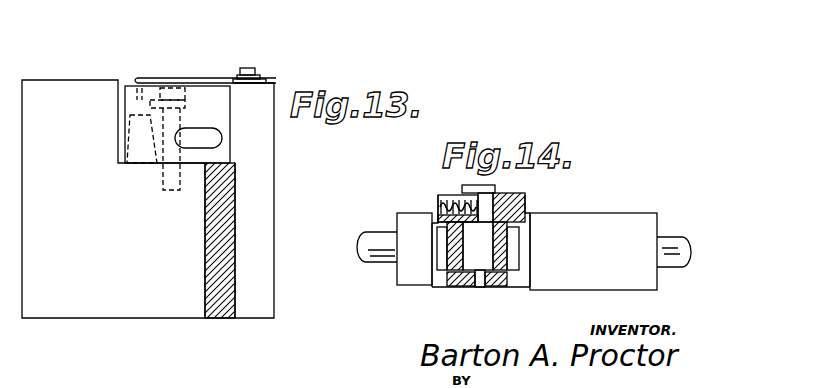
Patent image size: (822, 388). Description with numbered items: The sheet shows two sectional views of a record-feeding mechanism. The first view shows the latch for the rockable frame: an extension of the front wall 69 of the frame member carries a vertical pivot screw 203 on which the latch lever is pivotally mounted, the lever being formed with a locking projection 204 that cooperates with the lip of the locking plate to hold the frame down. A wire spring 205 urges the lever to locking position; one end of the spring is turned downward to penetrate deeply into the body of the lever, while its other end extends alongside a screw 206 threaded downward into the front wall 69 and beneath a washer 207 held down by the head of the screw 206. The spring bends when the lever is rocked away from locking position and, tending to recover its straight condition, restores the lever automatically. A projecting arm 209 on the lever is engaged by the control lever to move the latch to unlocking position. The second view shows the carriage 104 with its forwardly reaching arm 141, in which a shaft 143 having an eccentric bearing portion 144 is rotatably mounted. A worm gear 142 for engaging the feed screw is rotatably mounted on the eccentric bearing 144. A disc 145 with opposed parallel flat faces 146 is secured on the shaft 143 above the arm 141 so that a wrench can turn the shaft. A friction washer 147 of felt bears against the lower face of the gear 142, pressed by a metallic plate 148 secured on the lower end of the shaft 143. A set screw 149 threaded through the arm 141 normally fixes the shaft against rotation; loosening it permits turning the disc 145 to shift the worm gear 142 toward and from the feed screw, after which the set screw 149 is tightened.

In FIG. 13, the front wall 69 is at (210, 238).
In FIG. 13, the vertical pivot screw 203 is at (160, 105).
In FIG. 13, the locking projection 204 is at (127, 137).
In FIG. 13, the wire spring 205 is at (197, 52).
In FIG. 13, the screw 206 is at (247, 68).
In FIG. 13, the washer 207 is at (258, 73).
In FIG. 13, the projecting arm 209 is at (222, 113).
In FIG. 14, the carriage 104 is at (630, 221).
In FIG. 14, the forwardly reaching arm 141 is at (520, 211).
In FIG. 14, the worm gear 142 is at (513, 263).
In FIG. 14, the shaft 143 is at (482, 288).
In FIG. 14, the eccentric bearing portion 144 is at (497, 252).
In FIG. 14, the disc 145 is at (477, 187).
In FIG. 14, the flat faces 146 is at (460, 193).
In FIG. 14, the friction washer 147 is at (512, 276).
In FIG. 14, the metallic plate 148 is at (460, 288).
In FIG. 14, the set screw 149 is at (438, 205).